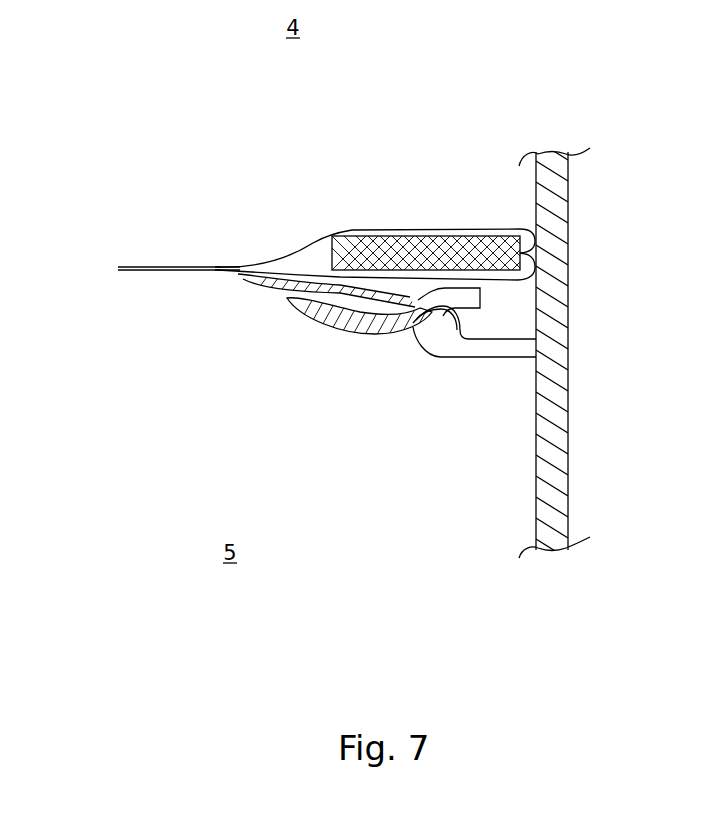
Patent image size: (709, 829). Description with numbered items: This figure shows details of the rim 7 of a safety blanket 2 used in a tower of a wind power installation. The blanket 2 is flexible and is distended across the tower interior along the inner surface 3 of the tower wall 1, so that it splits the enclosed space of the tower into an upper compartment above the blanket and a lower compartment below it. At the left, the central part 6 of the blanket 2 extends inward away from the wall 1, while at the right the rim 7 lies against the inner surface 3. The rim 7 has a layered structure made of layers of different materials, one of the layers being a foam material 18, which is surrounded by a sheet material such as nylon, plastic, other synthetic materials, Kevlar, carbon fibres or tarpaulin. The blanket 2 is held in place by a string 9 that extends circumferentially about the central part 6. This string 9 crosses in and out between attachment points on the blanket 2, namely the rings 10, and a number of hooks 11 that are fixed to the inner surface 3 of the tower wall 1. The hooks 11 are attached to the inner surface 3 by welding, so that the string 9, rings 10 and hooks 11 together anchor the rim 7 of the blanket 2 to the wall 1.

The wall 1 is at (565, 210).
The safety blanket 2 is at (216, 254).
The inner surface 3 is at (527, 488).
The central part 6 is at (127, 256).
The rim 7 is at (403, 222).
The string 9 is at (340, 322).
The rings 10 is at (268, 288).
The hooks 11 is at (458, 349).
The foam material 18 is at (457, 240).